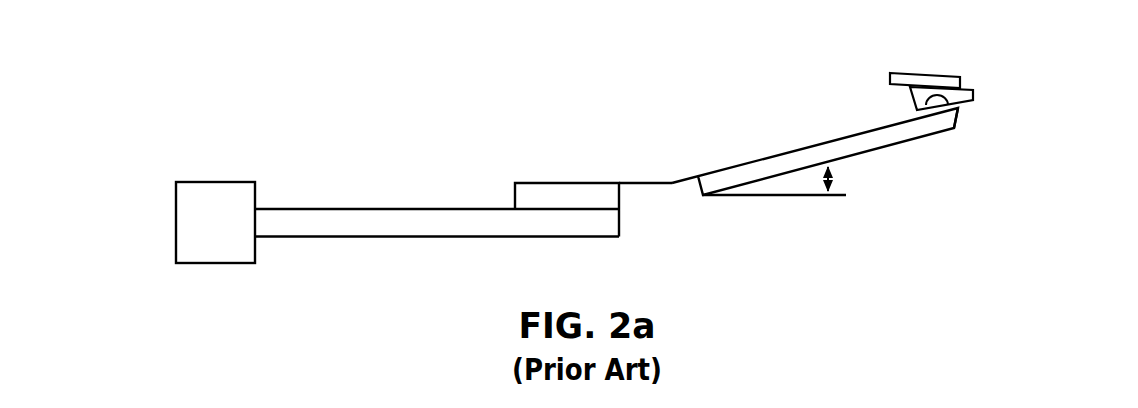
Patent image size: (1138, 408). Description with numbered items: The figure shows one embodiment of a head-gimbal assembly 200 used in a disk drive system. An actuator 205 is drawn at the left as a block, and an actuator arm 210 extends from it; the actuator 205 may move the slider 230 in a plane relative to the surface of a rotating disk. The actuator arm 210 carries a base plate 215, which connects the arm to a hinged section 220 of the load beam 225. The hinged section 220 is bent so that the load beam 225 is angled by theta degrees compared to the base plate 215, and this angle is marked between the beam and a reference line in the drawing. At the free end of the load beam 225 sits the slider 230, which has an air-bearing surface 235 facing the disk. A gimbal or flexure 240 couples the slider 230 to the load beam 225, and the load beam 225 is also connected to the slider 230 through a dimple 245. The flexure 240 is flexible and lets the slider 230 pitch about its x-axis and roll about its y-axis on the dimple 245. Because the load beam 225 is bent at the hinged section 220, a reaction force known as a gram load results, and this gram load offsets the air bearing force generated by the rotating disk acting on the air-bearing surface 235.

The head-gimbal assembly 200 is at (702, 122).
The actuator 205 is at (215, 209).
The actuator arm 210 is at (378, 240).
The base plate 215 is at (587, 178).
The hinged section 220 is at (658, 188).
The load beam 225 is at (777, 152).
The slider 230 is at (970, 80).
The air-bearing surface 235 is at (935, 64).
The gimbal or flexure 240 is at (966, 115).
The dimple 245 is at (918, 100).